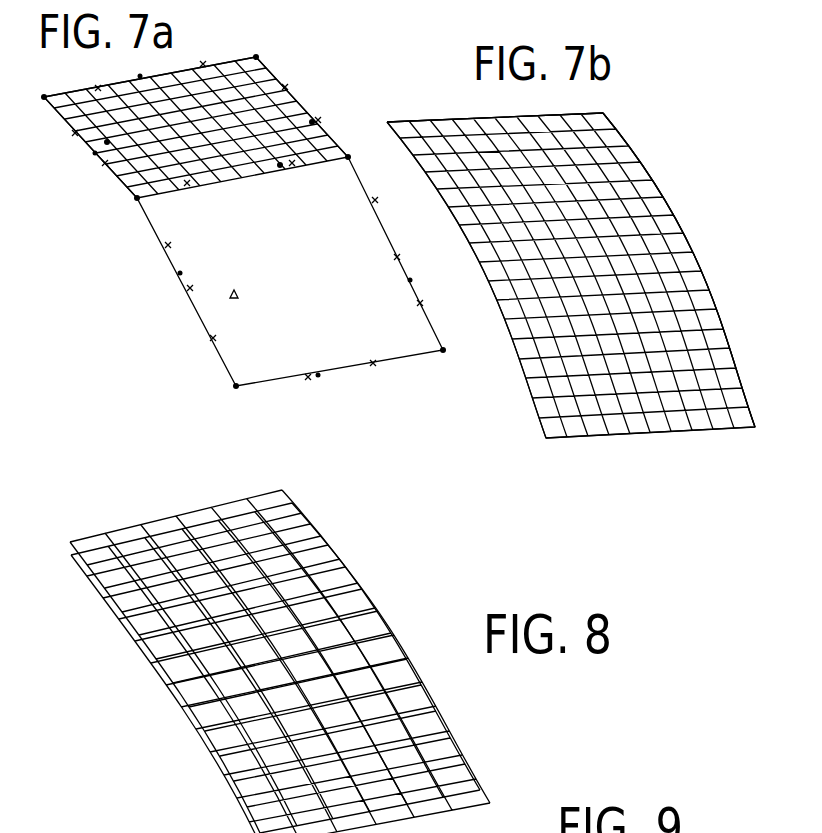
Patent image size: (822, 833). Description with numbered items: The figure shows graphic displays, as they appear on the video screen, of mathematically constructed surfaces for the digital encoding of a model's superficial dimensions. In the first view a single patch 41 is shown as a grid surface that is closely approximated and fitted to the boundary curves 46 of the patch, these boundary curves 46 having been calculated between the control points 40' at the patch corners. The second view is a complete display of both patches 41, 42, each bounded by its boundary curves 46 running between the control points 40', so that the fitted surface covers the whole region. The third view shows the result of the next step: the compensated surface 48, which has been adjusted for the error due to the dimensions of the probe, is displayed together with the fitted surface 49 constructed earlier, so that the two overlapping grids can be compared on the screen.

In FIG. 7a, the corner control points 40' is at (244, 217).
In FIG. 7b, the corner control points 40' is at (523, 103).
In FIG. 7a, the patch 41 is at (97, 150).
In FIG. 7b, the patch 41 is at (667, 178).
In FIG. 7a, the patch 42 is at (228, 295).
In FIG. 7b, the patch 42 is at (726, 329).
In FIG. 7a, the boundary curves 46 is at (120, 82).
In FIG. 7b, the boundary curves 46 is at (487, 121).
In FIG. 8, the compensated surface 48 is at (192, 698).
In FIG. 8, the fitted surface 49 is at (381, 599).